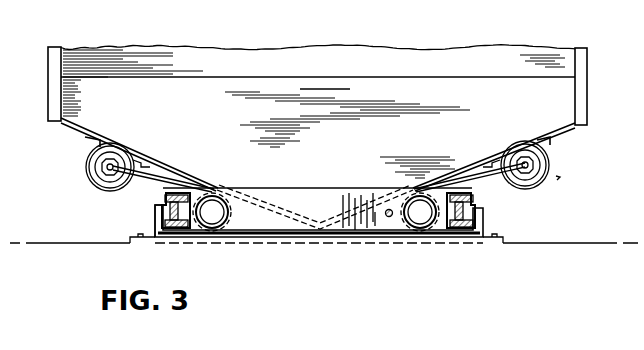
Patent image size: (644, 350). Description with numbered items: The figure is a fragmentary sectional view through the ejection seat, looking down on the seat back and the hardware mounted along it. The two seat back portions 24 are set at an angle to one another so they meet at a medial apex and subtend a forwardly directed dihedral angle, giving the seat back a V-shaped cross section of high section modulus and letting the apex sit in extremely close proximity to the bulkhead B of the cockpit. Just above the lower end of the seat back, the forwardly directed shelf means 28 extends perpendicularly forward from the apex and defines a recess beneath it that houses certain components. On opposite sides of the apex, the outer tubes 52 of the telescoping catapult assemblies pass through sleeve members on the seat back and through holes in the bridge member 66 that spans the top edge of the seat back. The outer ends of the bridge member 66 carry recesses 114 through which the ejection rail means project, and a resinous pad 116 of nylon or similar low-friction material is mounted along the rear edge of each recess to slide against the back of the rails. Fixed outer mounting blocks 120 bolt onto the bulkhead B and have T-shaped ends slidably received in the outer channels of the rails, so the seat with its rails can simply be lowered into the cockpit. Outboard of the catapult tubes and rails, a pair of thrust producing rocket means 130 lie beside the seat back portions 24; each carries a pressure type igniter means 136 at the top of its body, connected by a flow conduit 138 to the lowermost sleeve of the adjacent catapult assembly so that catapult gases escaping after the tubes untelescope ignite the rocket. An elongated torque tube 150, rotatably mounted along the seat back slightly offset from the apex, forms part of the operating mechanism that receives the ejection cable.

The seat back portions 24 is at (192, 172).
The shelf means 28 is at (373, 87).
The outer tube 52 is at (412, 224).
The bridge member 66 is at (374, 228).
The recesses 114 is at (470, 189).
The resinous pad 116 is at (451, 232).
The outer mounting blocks 120 is at (152, 218).
The thrust producing rocket means 130 is at (558, 178).
The pressure type igniter means 136 is at (540, 160).
The flow conduit 138 is at (133, 193).
The torque tube 150 is at (388, 216).
The bulkhead B is at (543, 243).